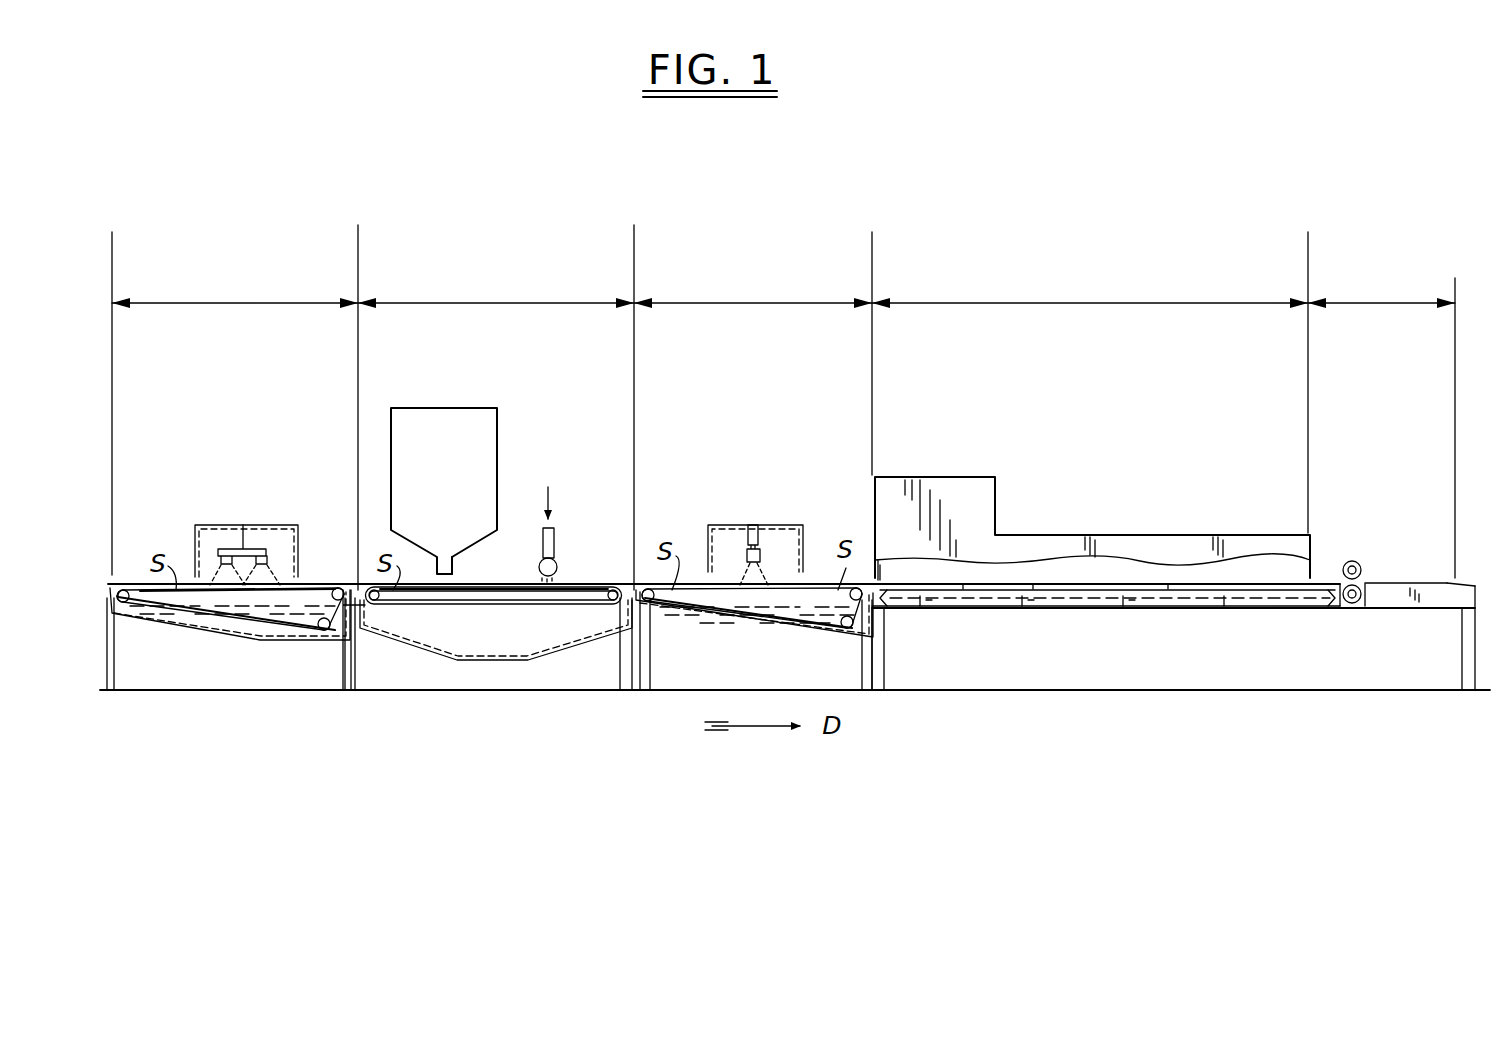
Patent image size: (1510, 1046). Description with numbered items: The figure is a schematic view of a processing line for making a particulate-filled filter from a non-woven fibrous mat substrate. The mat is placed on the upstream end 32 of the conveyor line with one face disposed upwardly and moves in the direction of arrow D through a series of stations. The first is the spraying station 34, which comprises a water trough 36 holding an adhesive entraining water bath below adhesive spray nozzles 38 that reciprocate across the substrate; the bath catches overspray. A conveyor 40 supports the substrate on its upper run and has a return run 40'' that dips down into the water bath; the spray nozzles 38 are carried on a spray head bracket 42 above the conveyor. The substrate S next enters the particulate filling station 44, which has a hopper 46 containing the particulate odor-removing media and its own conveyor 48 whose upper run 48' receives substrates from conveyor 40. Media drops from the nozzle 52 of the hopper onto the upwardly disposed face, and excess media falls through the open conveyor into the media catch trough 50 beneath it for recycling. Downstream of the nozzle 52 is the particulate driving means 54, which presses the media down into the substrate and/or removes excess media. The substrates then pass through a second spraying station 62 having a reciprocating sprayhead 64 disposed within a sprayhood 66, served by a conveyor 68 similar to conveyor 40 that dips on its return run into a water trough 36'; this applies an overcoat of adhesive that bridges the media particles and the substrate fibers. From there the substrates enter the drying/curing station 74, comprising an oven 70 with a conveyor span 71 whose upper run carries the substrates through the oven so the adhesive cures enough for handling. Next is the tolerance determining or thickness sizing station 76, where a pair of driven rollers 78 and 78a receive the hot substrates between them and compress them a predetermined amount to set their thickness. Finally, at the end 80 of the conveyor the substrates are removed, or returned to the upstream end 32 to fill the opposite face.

The upstream end 32 is at (122, 593).
The spraying station 34 is at (228, 418).
The water trough 36 is at (230, 631).
The water trough 36' is at (754, 632).
The adhesive spray nozzles 38 is at (262, 548).
The conveyor 40 is at (230, 595).
The return run 40'' is at (226, 668).
The spray head bracket 42 is at (207, 524).
The particulate filling station 44 is at (524, 363).
The hopper 46 is at (425, 479).
The conveyor 48 is at (482, 666).
The upper run 48' is at (494, 664).
The media catch trough 50 is at (545, 662).
The nozzle 52 is at (453, 570).
The particulate driving means 54 is at (572, 512).
The second spraying station 62 is at (733, 363).
The reciprocating sprayhead 64 is at (762, 548).
The sprayhood 66 is at (719, 523).
The conveyor 68 is at (722, 620).
The oven 70 is at (1058, 535).
The conveyor span 71 is at (1120, 614).
The drying/curing station 74 is at (1093, 373).
The tolerance determining station 76 is at (1363, 368).
The driven roller 78 is at (1358, 562).
The driven roller 78a is at (1354, 606).
The end 80 is at (1457, 576).